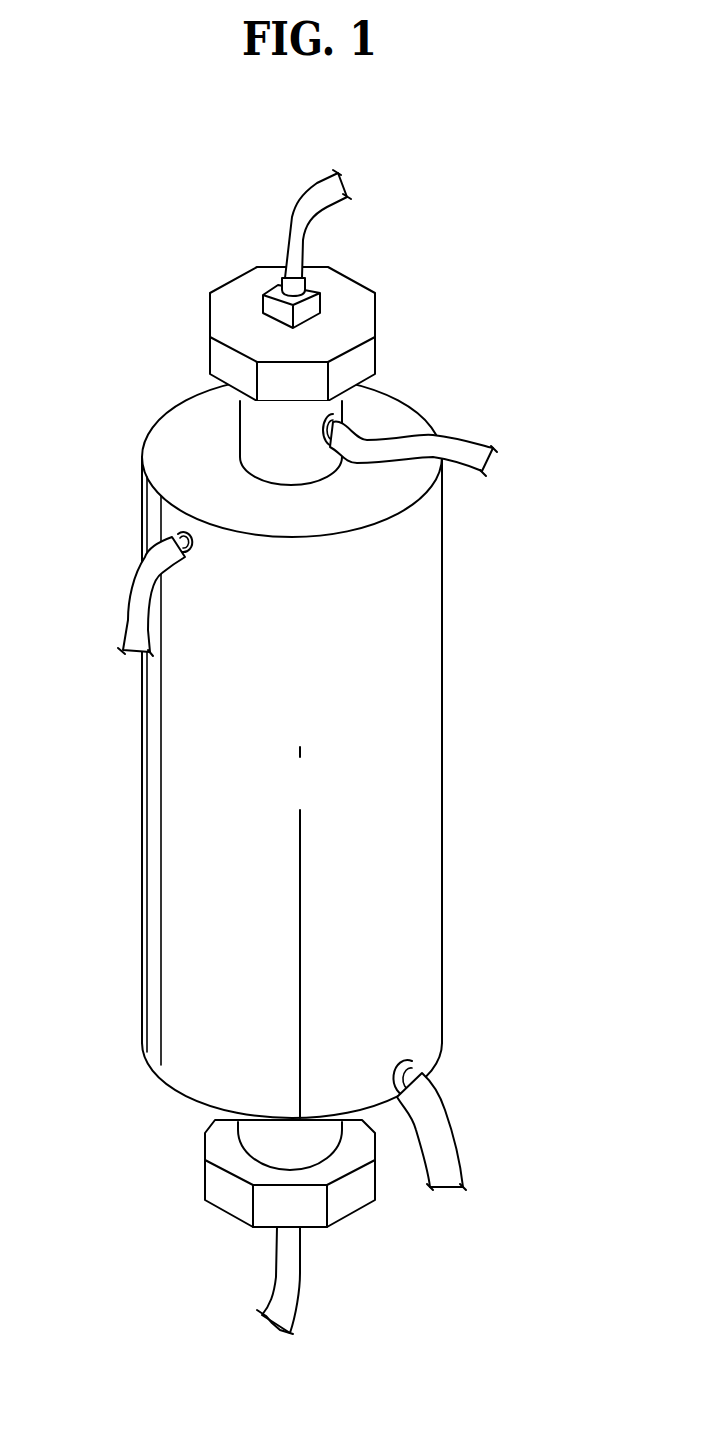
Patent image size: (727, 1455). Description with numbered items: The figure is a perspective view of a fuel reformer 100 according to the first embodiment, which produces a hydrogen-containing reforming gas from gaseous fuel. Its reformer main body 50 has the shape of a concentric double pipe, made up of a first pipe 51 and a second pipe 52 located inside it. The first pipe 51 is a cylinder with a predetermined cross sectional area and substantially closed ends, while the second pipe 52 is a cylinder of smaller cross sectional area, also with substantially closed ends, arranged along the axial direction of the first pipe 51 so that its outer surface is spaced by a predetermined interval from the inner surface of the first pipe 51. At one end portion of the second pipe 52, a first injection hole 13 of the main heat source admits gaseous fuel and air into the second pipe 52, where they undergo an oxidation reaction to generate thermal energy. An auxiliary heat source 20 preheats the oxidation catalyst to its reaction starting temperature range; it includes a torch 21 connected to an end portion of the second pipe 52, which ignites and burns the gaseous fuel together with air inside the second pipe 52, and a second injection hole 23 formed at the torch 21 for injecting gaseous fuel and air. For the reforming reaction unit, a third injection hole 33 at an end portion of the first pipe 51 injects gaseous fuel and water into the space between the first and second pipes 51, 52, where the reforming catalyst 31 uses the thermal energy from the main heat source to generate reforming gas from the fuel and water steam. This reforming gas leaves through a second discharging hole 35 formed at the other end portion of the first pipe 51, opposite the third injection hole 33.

The fuel reformer 100 is at (308, 153).
The first injection hole 13 is at (340, 412).
The auxiliary heat source 20 is at (272, 249).
The torch 21 is at (267, 308).
The second injection hole 23 is at (270, 288).
The reforming catalyst 31 is at (403, 313).
The third injection hole 33 is at (186, 528).
The second discharging hole 35 is at (410, 1057).
The reformer main body 50 is at (458, 686).
The first pipe 51 is at (143, 872).
The second pipe 52 is at (245, 1132).